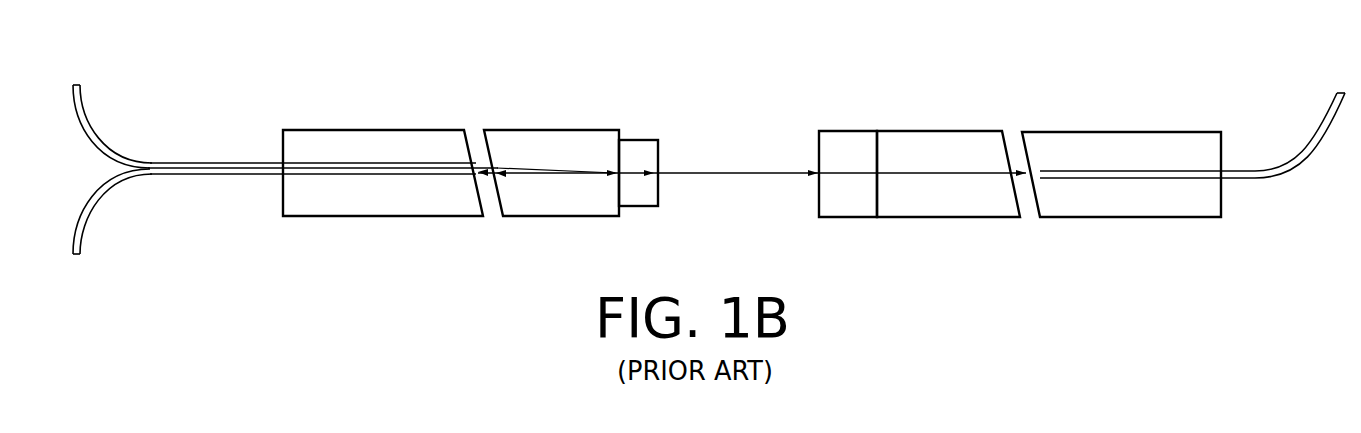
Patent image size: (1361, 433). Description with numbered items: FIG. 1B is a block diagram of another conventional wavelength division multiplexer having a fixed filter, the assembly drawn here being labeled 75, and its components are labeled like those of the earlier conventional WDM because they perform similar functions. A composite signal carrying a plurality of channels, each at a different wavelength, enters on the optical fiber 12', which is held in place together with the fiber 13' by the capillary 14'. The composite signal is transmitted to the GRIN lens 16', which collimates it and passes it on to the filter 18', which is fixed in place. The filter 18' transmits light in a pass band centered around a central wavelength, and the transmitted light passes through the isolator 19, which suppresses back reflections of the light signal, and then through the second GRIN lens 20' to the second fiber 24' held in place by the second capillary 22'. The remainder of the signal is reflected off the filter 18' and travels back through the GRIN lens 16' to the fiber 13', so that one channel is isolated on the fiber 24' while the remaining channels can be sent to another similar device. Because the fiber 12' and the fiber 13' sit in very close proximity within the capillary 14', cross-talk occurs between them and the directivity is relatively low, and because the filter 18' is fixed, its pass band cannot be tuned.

The prior art optical system 75 is at (739, 45).
The optical fiber 12' is at (274, 122).
The fiber 13' is at (285, 216).
The capillary 14' is at (383, 130).
The GRIN lens 16' is at (551, 130).
The filter 18' is at (638, 130).
The isolator 19 is at (847, 131).
The second GRIN lens 20' is at (948, 131).
The second capillary 22' is at (1121, 131).
The second fiber 24' is at (1192, 158).